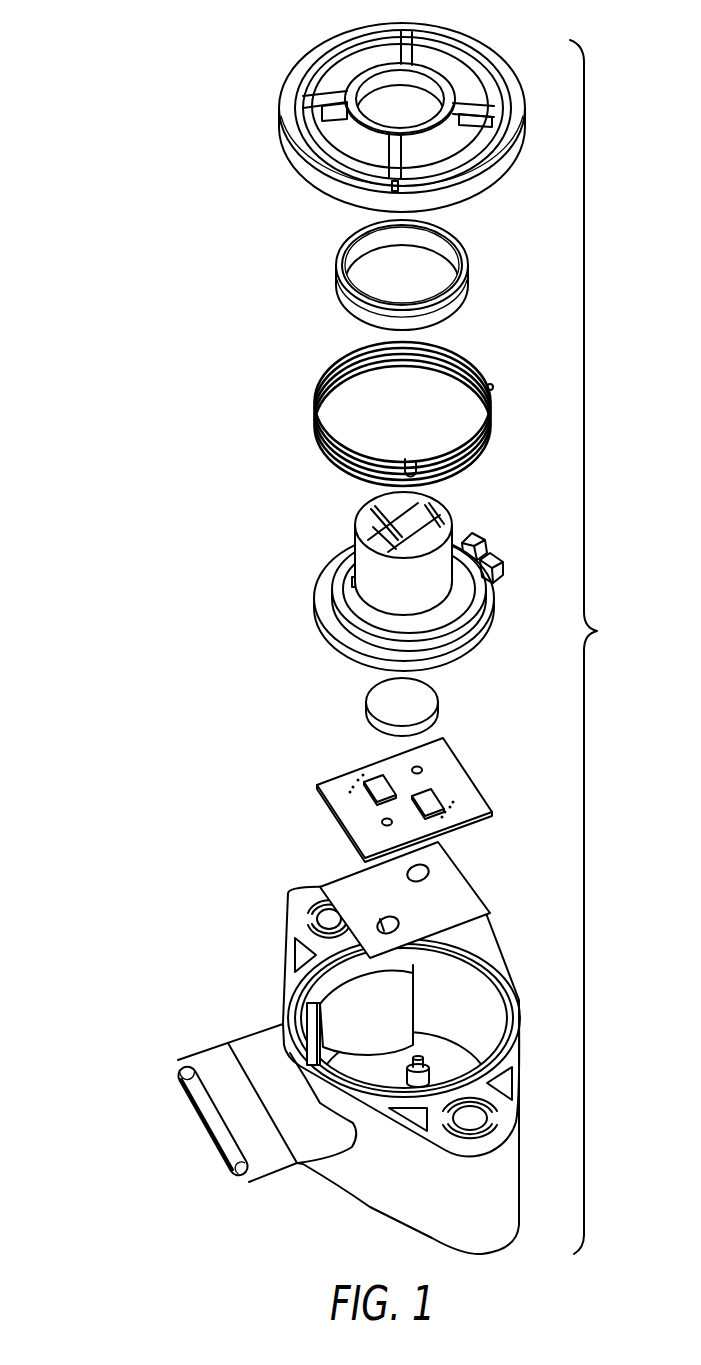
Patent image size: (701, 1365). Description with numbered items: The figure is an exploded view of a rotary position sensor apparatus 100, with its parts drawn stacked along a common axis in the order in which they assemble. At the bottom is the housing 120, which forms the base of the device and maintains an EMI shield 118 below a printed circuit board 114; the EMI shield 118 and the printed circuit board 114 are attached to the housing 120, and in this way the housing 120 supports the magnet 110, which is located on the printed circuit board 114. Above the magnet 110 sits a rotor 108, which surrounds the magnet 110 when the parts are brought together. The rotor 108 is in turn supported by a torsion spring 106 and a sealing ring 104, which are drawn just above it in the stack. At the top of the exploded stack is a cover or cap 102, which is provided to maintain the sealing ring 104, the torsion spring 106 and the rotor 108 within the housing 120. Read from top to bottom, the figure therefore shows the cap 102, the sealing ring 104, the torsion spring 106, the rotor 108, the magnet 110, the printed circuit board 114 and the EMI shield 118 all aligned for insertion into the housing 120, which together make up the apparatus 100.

The rotary position sensor apparatus 100 is at (127, 35).
The cap 102 is at (272, 108).
The sealing ring 104 is at (327, 257).
The torsion spring 106 is at (305, 391).
The rotor 108 is at (305, 587).
The magnet 110 is at (355, 706).
The printed circuit board 114 is at (307, 785).
The EMI shield 118 is at (331, 920).
The housing 120 is at (171, 1058).